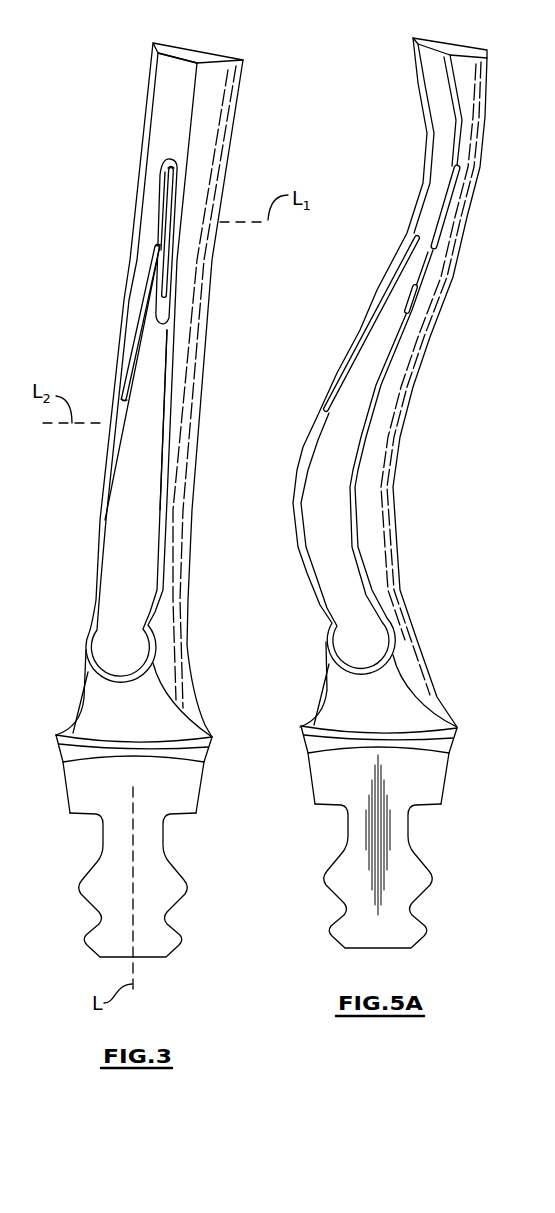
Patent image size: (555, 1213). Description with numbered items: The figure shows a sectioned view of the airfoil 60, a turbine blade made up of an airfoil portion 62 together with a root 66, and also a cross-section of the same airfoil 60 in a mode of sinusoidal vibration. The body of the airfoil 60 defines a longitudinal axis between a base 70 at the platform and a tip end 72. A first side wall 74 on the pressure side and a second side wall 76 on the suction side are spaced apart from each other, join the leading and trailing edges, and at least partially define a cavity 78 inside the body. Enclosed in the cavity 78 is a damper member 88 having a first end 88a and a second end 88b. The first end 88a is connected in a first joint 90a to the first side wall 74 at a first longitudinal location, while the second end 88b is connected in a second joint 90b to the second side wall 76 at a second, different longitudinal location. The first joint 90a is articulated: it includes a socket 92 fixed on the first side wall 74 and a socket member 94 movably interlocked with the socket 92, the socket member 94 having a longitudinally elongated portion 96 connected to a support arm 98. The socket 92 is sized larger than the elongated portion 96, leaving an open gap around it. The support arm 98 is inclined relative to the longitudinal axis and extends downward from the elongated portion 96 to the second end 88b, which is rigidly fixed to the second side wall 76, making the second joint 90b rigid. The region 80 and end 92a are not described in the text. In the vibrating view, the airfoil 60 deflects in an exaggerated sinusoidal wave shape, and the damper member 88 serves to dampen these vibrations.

In FIG. 3, the airfoil 60 is at (75, 450).
In FIG. 5A, the airfoil 60 is at (433, 397).
In FIG. 5A, the airfoil portion 62 is at (387, 527).
In FIG. 3, the root 66 is at (153, 855).
In FIG. 3, the base 70 is at (62, 747).
In FIG. 3, the tip end 72 is at (207, 50).
In FIG. 3, the first side wall 74 is at (212, 170).
In FIG. 3, the second side wall 76 is at (127, 283).
In FIG. 3, the cavity 78 is at (168, 115).
In FIG. 3, the loop / neck 80 is at (87, 695).
In FIG. 3, the damper member 88 is at (140, 267).
In FIG. 5A, the damper member 88 is at (405, 267).
In FIG. 3, the first end 88a is at (173, 237).
In FIG. 3, the second end 88b is at (120, 387).
In FIG. 3, the first joint 90a is at (157, 217).
In FIG. 3, the second joint 90b is at (133, 430).
In FIG. 3, the socket 92 is at (177, 168).
In FIG. 3, the second slot end 92a is at (173, 160).
In FIG. 5A, the socket member 94 is at (437, 250).
In FIG. 3, the longitudinally elongated portion 96 is at (163, 200).
In FIG. 3, the support arm 98 is at (140, 340).